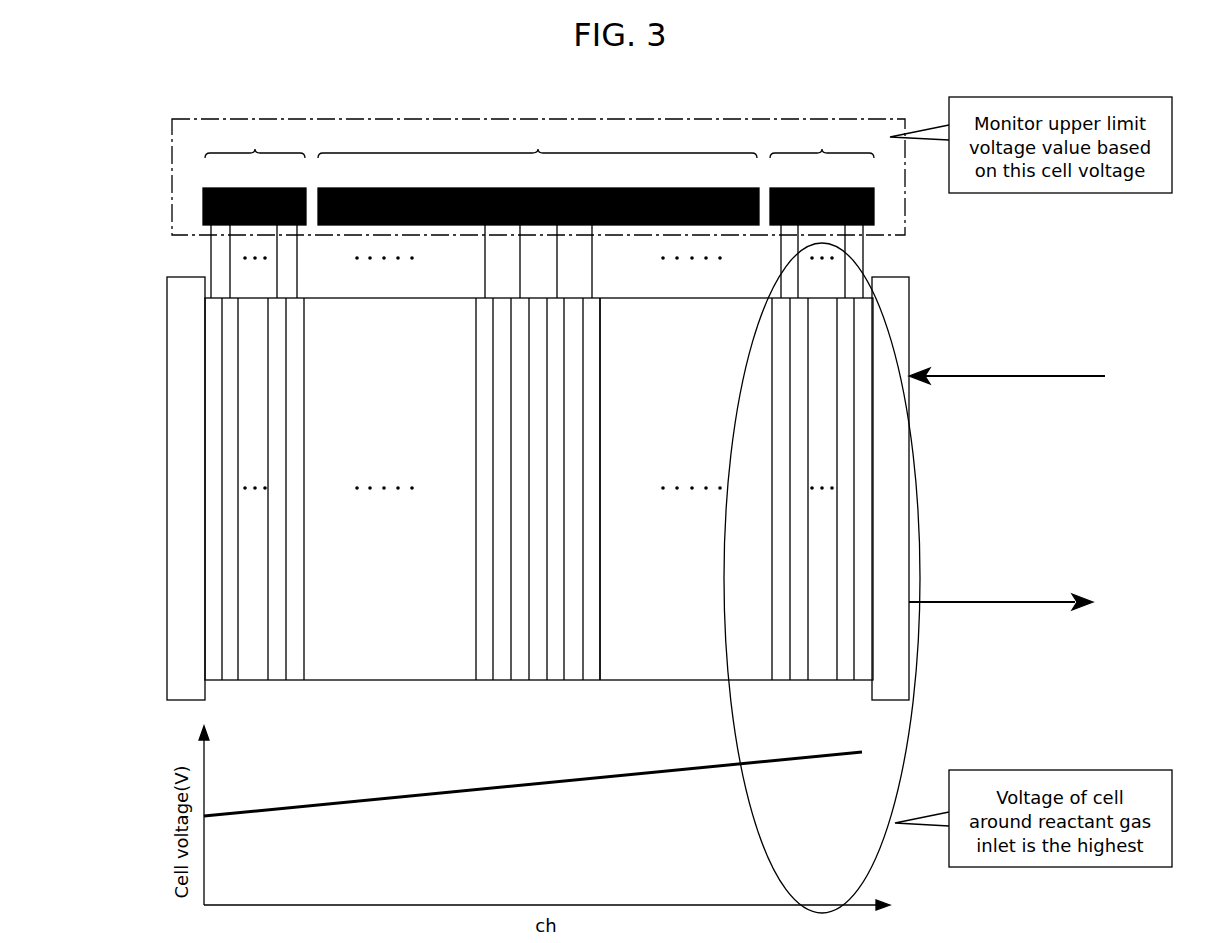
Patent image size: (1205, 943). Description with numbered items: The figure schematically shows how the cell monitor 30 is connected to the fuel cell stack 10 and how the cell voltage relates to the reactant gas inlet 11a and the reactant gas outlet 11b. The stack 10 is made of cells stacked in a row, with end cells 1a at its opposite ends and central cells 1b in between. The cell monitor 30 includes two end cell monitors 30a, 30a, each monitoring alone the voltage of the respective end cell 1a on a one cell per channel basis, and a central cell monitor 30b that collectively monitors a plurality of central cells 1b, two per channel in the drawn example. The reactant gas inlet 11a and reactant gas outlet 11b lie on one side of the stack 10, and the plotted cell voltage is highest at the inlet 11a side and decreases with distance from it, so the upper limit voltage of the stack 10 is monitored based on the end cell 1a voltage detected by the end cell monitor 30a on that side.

The fuel cell stack 10 is at (148, 340).
The end cell 1a is at (210, 395).
The central cell 1b is at (594, 379).
The reactant gas inlet 11a is at (912, 381).
The reactant gas outlet 11b is at (912, 607).
The cell monitor 30 is at (170, 207).
The end cell monitor 30a is at (212, 190).
The central cell monitor 30b is at (398, 188).